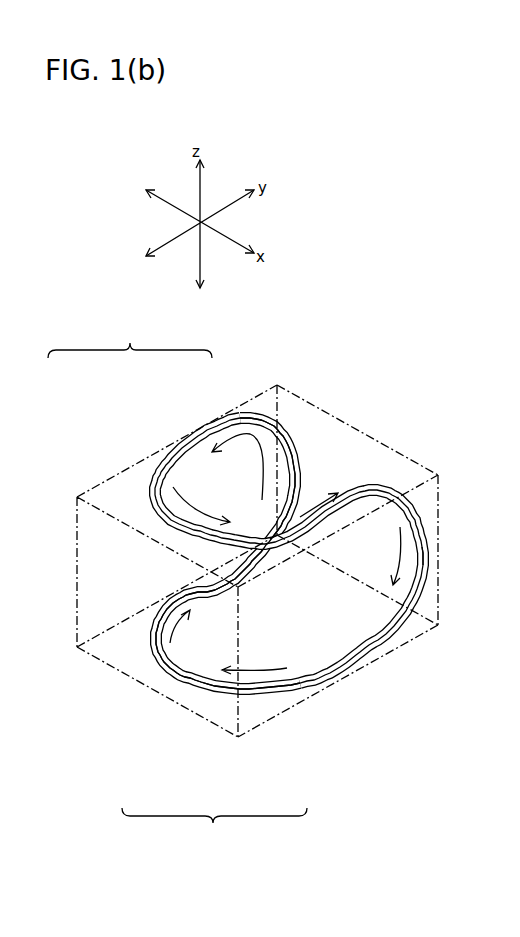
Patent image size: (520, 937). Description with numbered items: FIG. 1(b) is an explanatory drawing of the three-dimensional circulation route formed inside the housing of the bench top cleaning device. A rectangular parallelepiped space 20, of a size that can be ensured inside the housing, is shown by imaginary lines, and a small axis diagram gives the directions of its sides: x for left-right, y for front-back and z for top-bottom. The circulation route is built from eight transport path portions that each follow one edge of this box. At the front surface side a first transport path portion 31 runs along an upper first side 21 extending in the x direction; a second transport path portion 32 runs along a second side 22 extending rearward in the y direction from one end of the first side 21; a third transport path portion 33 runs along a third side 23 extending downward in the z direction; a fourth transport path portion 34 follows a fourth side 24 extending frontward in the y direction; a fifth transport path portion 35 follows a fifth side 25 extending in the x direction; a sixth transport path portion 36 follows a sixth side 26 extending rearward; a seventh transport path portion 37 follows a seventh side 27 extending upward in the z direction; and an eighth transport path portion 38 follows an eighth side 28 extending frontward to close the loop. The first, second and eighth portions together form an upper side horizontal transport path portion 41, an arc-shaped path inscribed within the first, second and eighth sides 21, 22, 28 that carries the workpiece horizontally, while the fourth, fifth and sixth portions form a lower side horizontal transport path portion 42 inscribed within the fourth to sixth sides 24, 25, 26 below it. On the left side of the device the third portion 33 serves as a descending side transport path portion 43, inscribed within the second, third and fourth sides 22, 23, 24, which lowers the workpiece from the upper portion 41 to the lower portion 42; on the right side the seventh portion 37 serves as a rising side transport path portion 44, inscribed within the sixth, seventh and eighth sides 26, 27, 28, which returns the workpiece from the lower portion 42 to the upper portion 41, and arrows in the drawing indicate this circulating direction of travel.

The rectangular parallelepiped space 20 is at (357, 424).
The first side 21 is at (117, 520).
The second side 22 is at (417, 486).
The third side 23 is at (442, 543).
The fourth side 24 is at (403, 648).
The fifth side 25 is at (110, 666).
The sixth side 26 is at (130, 612).
The seventh side 27 is at (277, 410).
The eighth side 28 is at (238, 400).
The first transport path portion 31 is at (157, 500).
The second transport path portion 32 is at (163, 513).
The third transport path portion 33 is at (422, 590).
The fourth transport path portion 34 is at (370, 650).
The fifth transport path portion 35 is at (193, 677).
The sixth transport path portion 36 is at (170, 653).
The seventh transport path portion 37 is at (300, 473).
The eighth transport path portion 38 is at (210, 430).
The upper side horizontal transport path portion 41 is at (130, 337).
The lower side horizontal transport path portion 42 is at (214, 827).
The descending side transport path portion 43 is at (471, 582).
The rising side transport path portion 44 is at (337, 447).